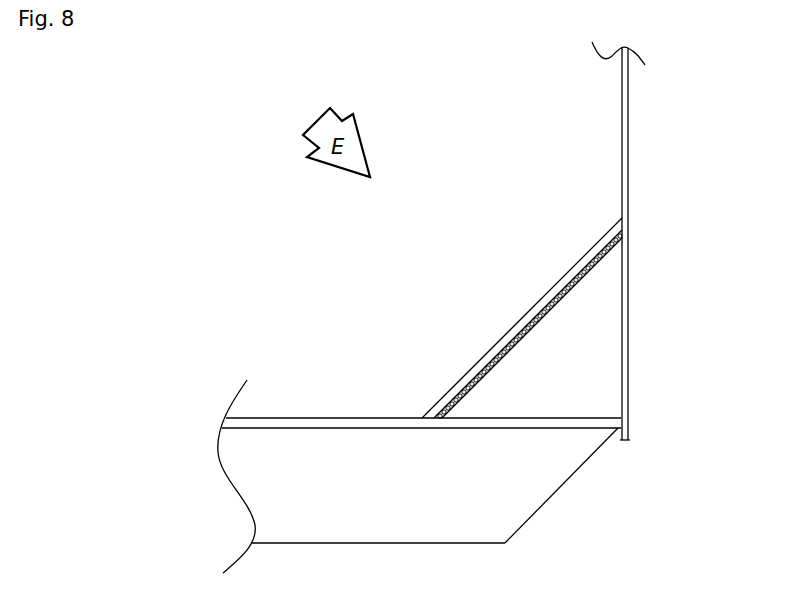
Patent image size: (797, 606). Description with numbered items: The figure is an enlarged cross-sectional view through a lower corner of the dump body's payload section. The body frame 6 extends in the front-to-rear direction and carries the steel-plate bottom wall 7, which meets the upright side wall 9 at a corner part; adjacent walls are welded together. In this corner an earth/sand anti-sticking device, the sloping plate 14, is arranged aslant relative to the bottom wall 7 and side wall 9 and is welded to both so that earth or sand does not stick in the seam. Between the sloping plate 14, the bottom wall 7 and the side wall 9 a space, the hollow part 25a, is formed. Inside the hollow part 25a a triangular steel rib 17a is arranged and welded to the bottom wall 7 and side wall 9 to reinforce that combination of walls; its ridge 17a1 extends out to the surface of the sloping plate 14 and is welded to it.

The body frame 6 is at (420, 545).
The bottom wall 7 is at (349, 417).
The side wall 9 is at (628, 127).
The sloping plate 14 is at (560, 291).
The rib 17a is at (497, 312).
The ridge 17a1 is at (512, 327).
The hollow part 25a is at (607, 309).